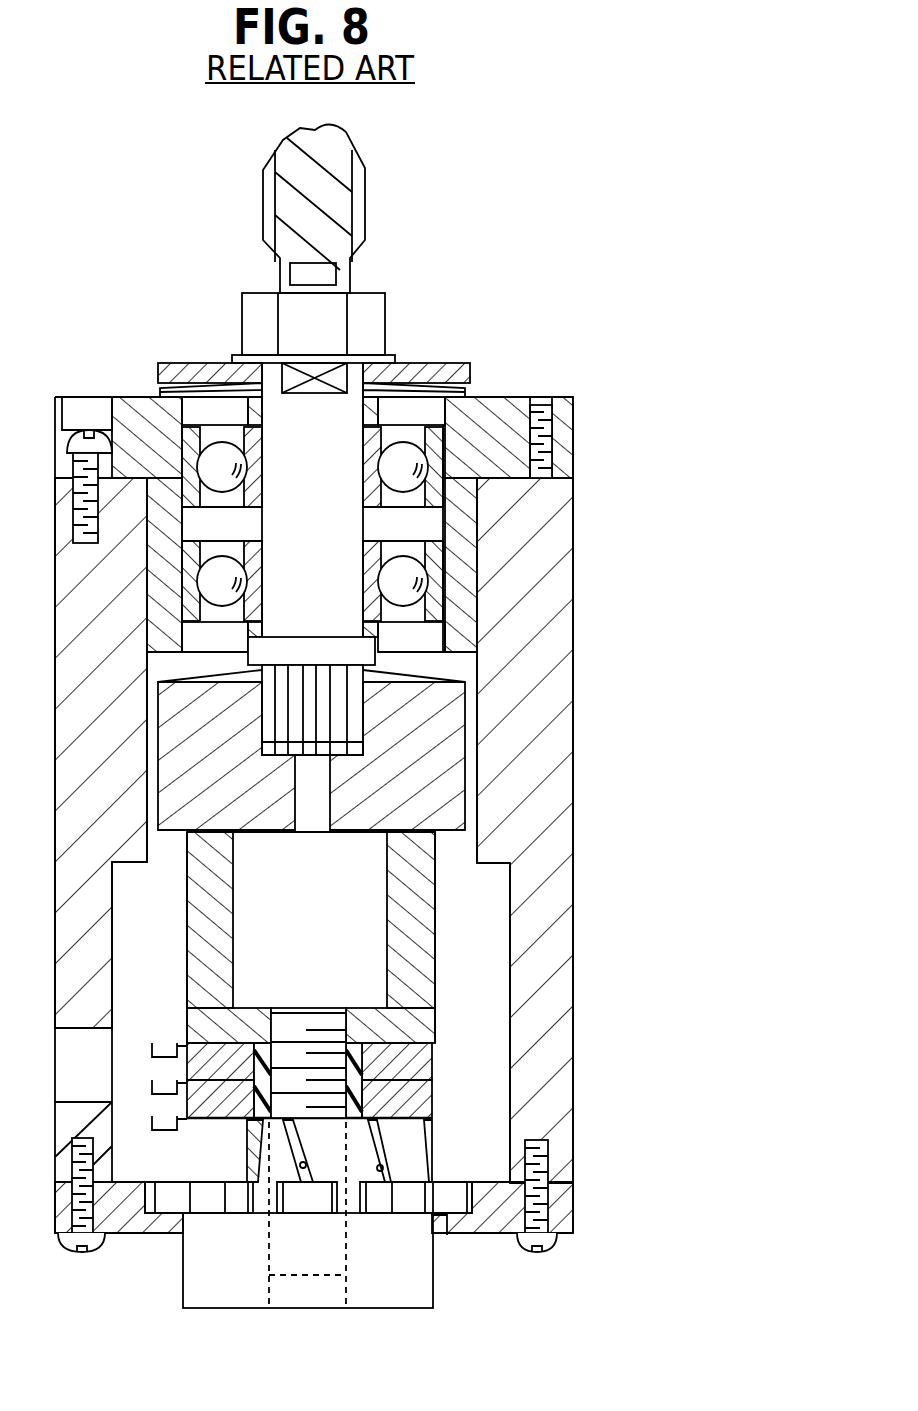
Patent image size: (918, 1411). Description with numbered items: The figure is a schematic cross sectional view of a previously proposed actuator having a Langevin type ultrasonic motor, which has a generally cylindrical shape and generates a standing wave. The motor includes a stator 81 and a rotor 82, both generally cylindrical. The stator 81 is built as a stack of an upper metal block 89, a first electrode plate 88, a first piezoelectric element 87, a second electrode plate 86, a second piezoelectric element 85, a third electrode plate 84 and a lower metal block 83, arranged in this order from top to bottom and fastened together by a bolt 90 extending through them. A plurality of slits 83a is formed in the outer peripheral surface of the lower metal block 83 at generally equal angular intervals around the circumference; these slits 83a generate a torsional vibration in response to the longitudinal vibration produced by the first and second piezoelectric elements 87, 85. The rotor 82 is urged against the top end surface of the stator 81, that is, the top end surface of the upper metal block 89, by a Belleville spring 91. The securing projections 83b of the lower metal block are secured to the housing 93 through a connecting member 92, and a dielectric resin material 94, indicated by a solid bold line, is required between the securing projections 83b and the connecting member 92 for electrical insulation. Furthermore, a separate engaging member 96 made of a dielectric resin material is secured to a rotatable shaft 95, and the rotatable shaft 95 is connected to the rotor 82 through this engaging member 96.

The stator 81 is at (452, 919).
The rotor 82 is at (481, 777).
The lower metal block 83 is at (432, 1283).
The slits 83a is at (306, 1163).
The securing projections 83b is at (178, 1192).
The third electrode plate 84 is at (432, 1118).
The second piezoelectric element 85 is at (412, 1098).
The second electrode plate 86 is at (432, 1082).
The first piezoelectric element 87 is at (418, 1055).
The first electrode plate 88 is at (435, 1022).
The upper metal block 89 is at (425, 966).
The bolt 90 is at (297, 1028).
The Belleville spring 91 is at (440, 672).
The connecting member 92 is at (136, 1225).
The housing 93 is at (573, 997).
The dielectric resin material 94 is at (140, 1195).
The rotatable shaft 95 is at (332, 478).
The engaging member 96 is at (327, 682).